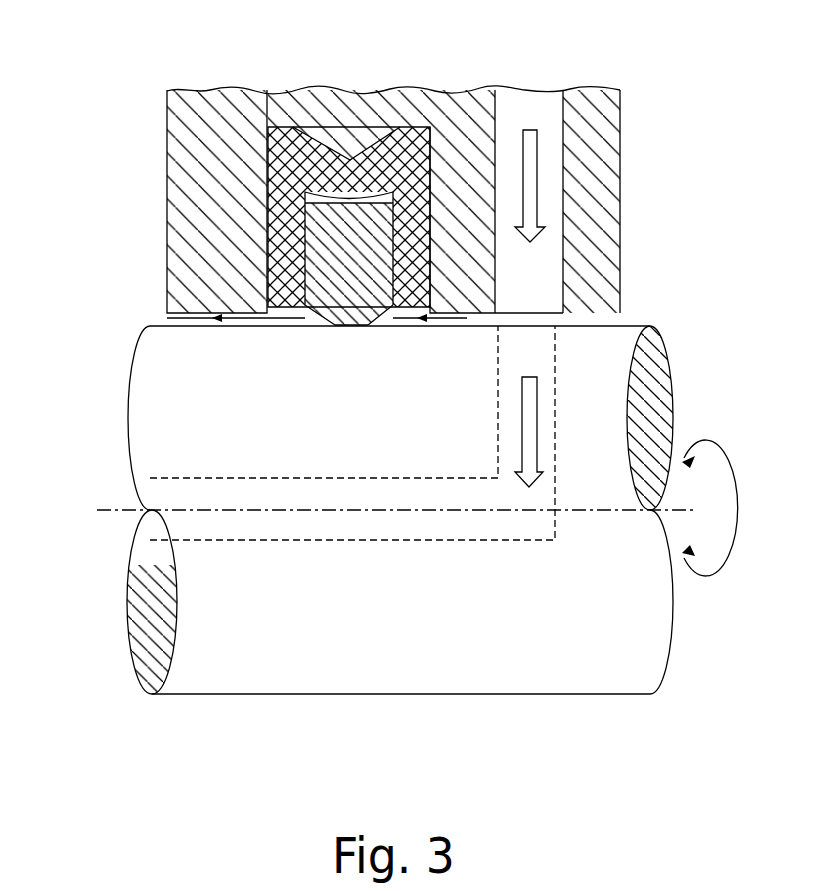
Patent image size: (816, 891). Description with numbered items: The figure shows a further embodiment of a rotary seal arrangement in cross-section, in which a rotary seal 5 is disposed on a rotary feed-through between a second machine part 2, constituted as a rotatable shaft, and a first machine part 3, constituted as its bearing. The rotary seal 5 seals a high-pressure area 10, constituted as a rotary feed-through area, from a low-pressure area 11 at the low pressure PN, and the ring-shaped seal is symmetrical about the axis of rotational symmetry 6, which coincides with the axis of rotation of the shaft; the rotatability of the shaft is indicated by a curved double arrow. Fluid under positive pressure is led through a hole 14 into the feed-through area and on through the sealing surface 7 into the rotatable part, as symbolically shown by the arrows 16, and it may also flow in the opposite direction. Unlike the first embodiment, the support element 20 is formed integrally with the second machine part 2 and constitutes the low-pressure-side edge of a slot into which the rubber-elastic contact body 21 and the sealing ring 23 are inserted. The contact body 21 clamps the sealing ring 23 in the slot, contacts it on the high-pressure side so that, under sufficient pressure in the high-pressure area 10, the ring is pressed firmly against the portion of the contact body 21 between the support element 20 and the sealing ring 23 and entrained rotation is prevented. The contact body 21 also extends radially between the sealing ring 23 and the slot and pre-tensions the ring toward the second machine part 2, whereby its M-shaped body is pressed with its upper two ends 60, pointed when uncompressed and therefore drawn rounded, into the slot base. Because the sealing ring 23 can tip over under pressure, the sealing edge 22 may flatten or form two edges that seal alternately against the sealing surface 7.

The second machine part 2 is at (160, 383).
The first machine part 3 is at (603, 172).
The rotary seal 5 is at (304, 317).
The axis of rotational symmetry 6 is at (115, 512).
The sealing surface 7 is at (211, 315).
The high-pressure area 10 is at (669, 293).
The low-pressure area 11 is at (141, 308).
The hole 14 is at (358, 524).
The arrows 16 is at (528, 128).
The support element 20 is at (204, 194).
The contact body 21 is at (268, 126).
The sealing edge 22 is at (350, 330).
The sealing ring 23 is at (360, 292).
The upper two ends 60 is at (300, 125).